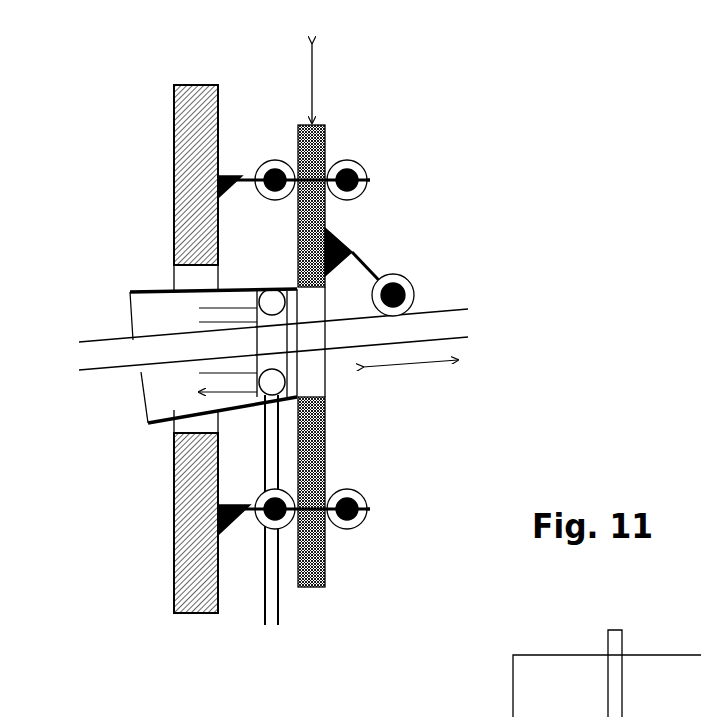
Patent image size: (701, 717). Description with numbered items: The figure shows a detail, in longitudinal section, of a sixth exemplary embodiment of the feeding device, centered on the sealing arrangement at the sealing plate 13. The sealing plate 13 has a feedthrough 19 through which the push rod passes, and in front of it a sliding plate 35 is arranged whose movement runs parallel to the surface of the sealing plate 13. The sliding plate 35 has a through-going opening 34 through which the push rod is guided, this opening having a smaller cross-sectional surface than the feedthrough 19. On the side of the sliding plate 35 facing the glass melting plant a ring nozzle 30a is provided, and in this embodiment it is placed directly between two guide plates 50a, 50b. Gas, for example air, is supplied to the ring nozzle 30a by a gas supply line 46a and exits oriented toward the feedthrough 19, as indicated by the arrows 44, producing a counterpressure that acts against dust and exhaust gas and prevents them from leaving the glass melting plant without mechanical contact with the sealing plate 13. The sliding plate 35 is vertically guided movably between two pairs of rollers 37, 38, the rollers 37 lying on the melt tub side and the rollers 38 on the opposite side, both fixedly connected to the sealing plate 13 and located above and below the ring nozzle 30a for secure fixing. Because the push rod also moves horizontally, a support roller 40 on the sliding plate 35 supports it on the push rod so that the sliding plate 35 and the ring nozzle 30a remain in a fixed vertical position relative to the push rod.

The sealing plate 13 is at (195, 145).
The feedthrough 19 is at (195, 267).
The guide plate 50a is at (150, 290).
The guide plate 50b is at (170, 422).
The arrows 44 is at (232, 303).
The ring nozzle 30a is at (278, 378).
The gas supply line 46a is at (278, 613).
The sliding plate 35 is at (325, 218).
The through-going opening 34 is at (313, 362).
The rollers 37 is at (268, 160).
The rollers 38 is at (368, 183).
The support roller 40 is at (415, 290).